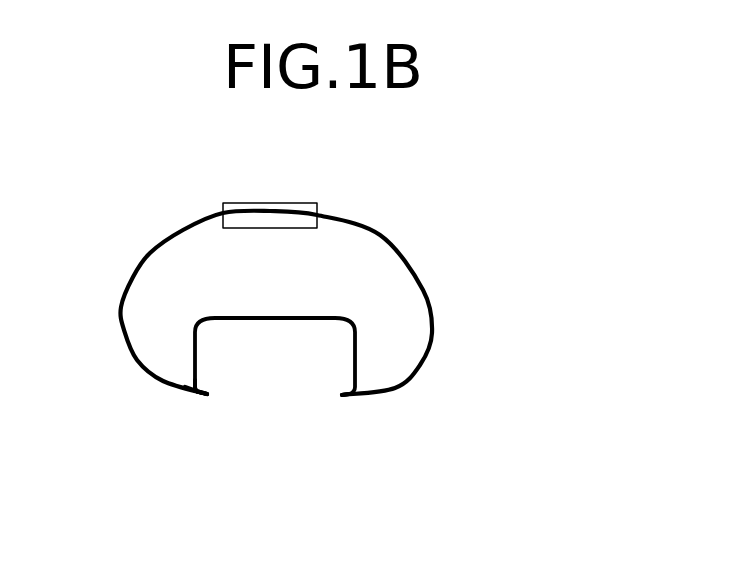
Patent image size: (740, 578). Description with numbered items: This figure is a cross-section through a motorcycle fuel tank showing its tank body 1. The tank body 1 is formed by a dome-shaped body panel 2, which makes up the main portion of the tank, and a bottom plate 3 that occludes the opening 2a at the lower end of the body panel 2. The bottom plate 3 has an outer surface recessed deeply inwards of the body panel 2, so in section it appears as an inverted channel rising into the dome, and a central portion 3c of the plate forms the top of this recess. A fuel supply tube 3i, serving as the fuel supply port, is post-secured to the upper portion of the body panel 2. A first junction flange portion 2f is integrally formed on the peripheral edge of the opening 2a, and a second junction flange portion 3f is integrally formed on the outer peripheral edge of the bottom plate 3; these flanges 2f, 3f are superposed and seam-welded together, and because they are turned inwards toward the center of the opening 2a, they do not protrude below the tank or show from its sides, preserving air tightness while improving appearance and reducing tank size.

The tank body 1 is at (350, 328).
The body panel 2 is at (426, 278).
The opening 2a is at (263, 395).
The first junction flange portion 2f is at (208, 397).
The bottom plate 3 is at (357, 347).
The center portion of inner member 3c is at (282, 318).
The second junction flange portion 3f is at (208, 391).
The fuel supply tube 3i is at (311, 202).